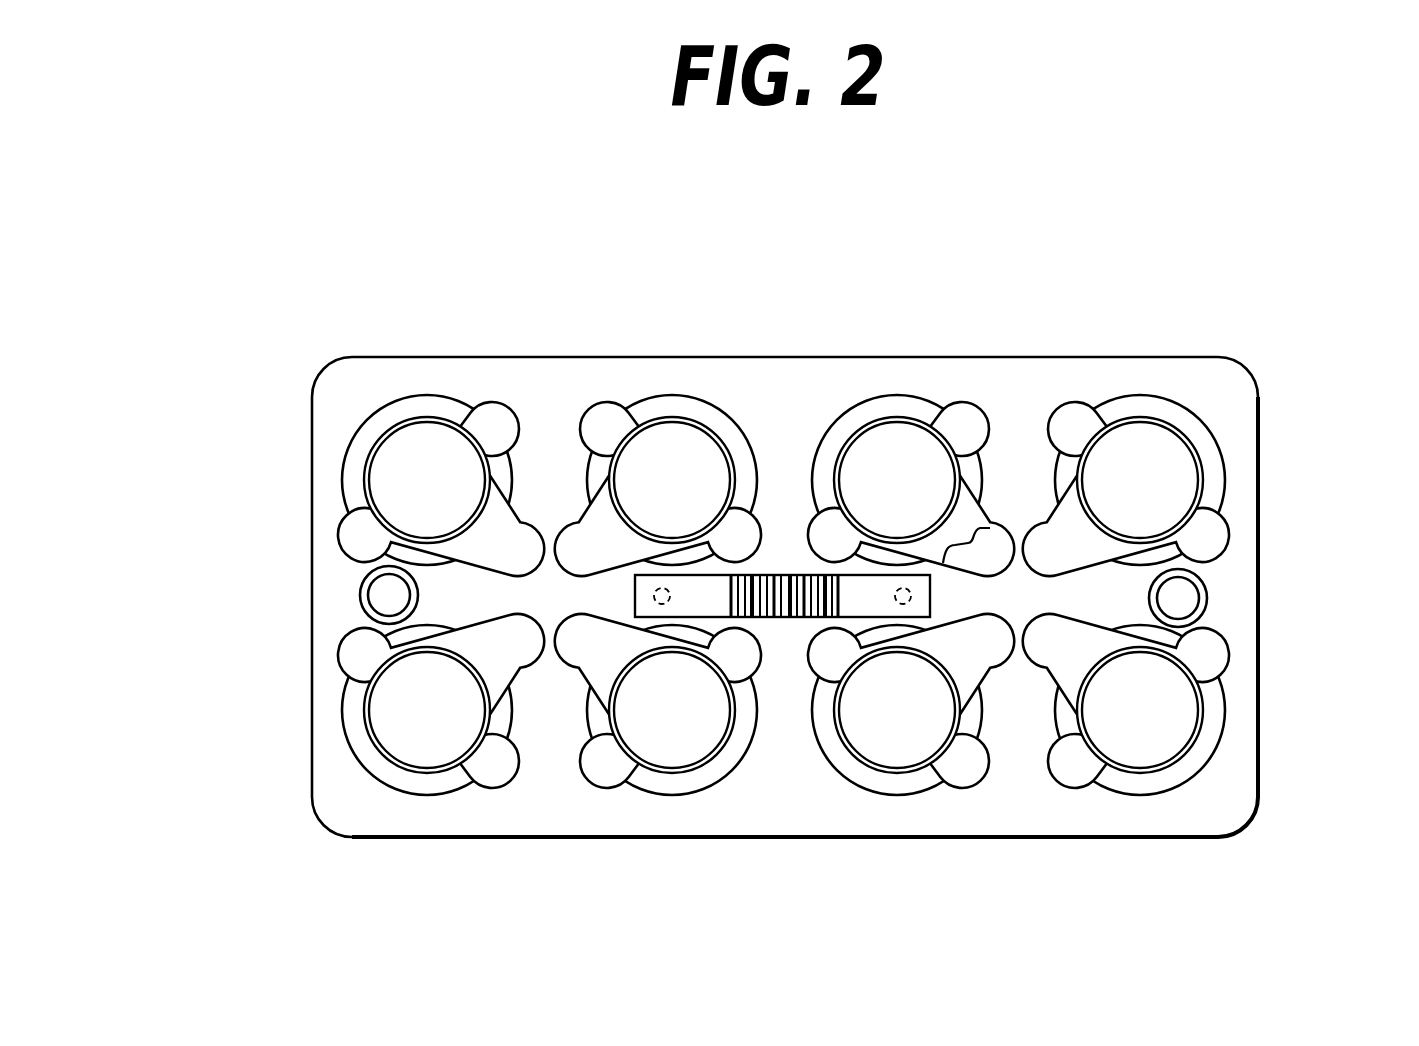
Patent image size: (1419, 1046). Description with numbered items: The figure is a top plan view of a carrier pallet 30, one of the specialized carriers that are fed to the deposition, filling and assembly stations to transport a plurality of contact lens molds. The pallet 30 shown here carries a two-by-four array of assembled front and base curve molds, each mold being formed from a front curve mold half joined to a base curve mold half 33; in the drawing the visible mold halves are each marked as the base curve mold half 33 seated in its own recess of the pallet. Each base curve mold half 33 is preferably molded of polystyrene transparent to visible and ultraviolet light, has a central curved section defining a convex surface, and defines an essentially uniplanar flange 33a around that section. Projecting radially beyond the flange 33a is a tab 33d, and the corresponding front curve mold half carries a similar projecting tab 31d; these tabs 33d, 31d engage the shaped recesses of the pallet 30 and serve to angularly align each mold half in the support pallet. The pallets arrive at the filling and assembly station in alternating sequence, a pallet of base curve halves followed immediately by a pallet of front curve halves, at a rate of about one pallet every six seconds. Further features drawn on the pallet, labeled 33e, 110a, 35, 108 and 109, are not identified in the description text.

The carrier pallet 30 is at (757, 306).
The base curve mold half 33 is at (787, 602).
The flange 33a is at (685, 422).
The projecting tab 33d is at (580, 546).
The well bottom 33e is at (686, 784).
The projecting tab 31d is at (988, 549).
The lobe 110a is at (1085, 412).
The bar code label 35 is at (782, 576).
The alignment hole 108 is at (1205, 608).
The alignment hole 109 is at (364, 602).